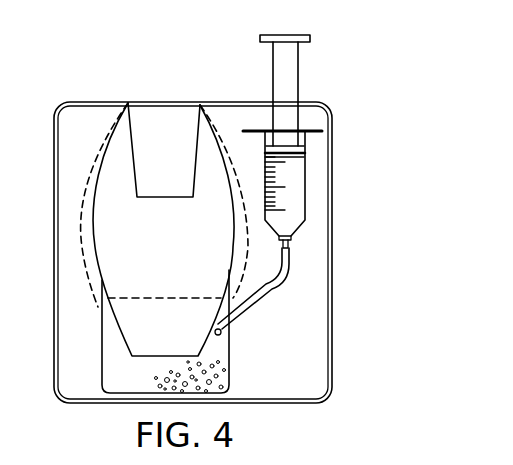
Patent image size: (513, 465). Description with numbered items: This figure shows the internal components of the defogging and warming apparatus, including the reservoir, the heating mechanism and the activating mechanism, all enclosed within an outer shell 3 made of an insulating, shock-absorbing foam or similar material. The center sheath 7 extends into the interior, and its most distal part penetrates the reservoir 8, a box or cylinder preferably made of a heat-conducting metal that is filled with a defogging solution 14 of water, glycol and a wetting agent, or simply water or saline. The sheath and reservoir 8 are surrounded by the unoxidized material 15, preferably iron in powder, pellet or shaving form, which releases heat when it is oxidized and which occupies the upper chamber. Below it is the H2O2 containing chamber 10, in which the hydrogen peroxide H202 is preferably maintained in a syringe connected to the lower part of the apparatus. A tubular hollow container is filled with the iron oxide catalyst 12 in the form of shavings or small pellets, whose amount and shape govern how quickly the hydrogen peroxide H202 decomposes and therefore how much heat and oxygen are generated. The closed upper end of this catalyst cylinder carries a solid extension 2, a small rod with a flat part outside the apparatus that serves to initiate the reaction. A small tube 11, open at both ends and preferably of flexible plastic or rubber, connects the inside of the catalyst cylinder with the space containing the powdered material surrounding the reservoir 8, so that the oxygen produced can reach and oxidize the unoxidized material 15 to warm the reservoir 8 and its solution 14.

The solid extension 2 is at (273, 35).
The outer shell 3 is at (331, 256).
The center sheath 7 is at (158, 133).
The reservoir 8 is at (96, 188).
The H2O2 containing chamber 10 is at (306, 165).
The hydrogen peroxide H202 is at (303, 180).
The small tube 11 is at (258, 306).
The iron oxide catalyst 12 is at (224, 375).
The defogging solution 14 is at (138, 328).
The unoxidized material 15 is at (80, 212).